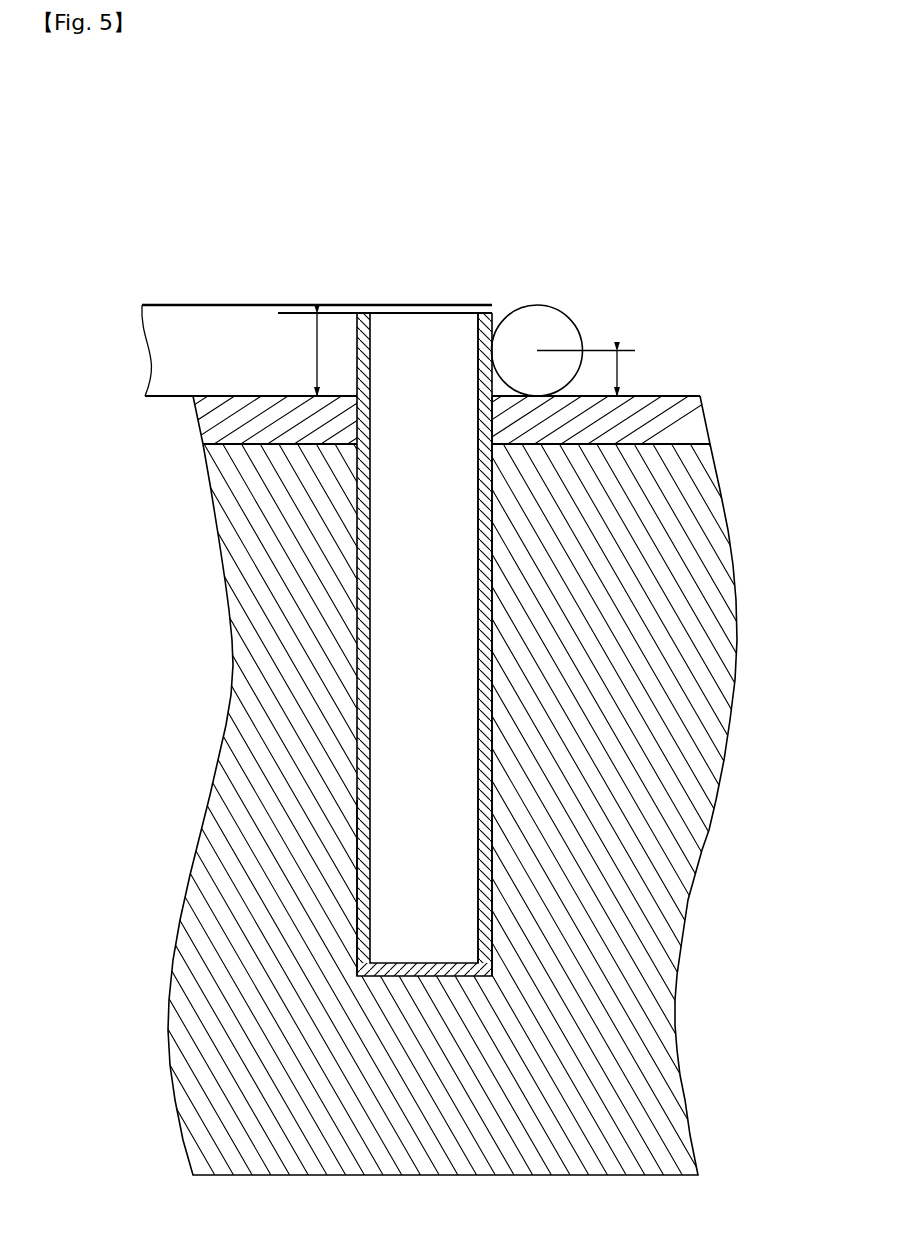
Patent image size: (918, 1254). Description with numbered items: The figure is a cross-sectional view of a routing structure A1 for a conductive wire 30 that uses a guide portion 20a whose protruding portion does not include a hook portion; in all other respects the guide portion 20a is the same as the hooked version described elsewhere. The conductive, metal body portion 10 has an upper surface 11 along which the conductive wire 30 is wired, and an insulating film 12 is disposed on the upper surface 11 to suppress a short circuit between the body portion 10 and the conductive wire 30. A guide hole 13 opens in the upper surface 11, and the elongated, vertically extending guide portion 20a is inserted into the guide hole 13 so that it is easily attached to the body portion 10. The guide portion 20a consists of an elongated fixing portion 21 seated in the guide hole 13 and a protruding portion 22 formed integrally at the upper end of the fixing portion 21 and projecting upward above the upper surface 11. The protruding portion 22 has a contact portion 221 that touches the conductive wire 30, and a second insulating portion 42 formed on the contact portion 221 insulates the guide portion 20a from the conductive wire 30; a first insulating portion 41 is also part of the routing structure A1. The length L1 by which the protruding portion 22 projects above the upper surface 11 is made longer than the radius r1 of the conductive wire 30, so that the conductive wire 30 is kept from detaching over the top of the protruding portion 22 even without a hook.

The routing structure A1 is at (122, 132).
The body portion 10 is at (307, 588).
The upper surface 11 is at (678, 396).
The insulating film 12 is at (203, 442).
The guide hole 13 is at (362, 873).
The guide portion 20a is at (405, 328).
The fixing portion 21 is at (397, 700).
The protruding portion 22 is at (468, 591).
The contact portion 221 is at (470, 342).
The conductive wire 30 is at (183, 323).
The first insulating portion 41 is at (492, 672).
The second insulating portion 42 is at (492, 313).
The length L1 is at (315, 353).
The radius r1 is at (620, 372).